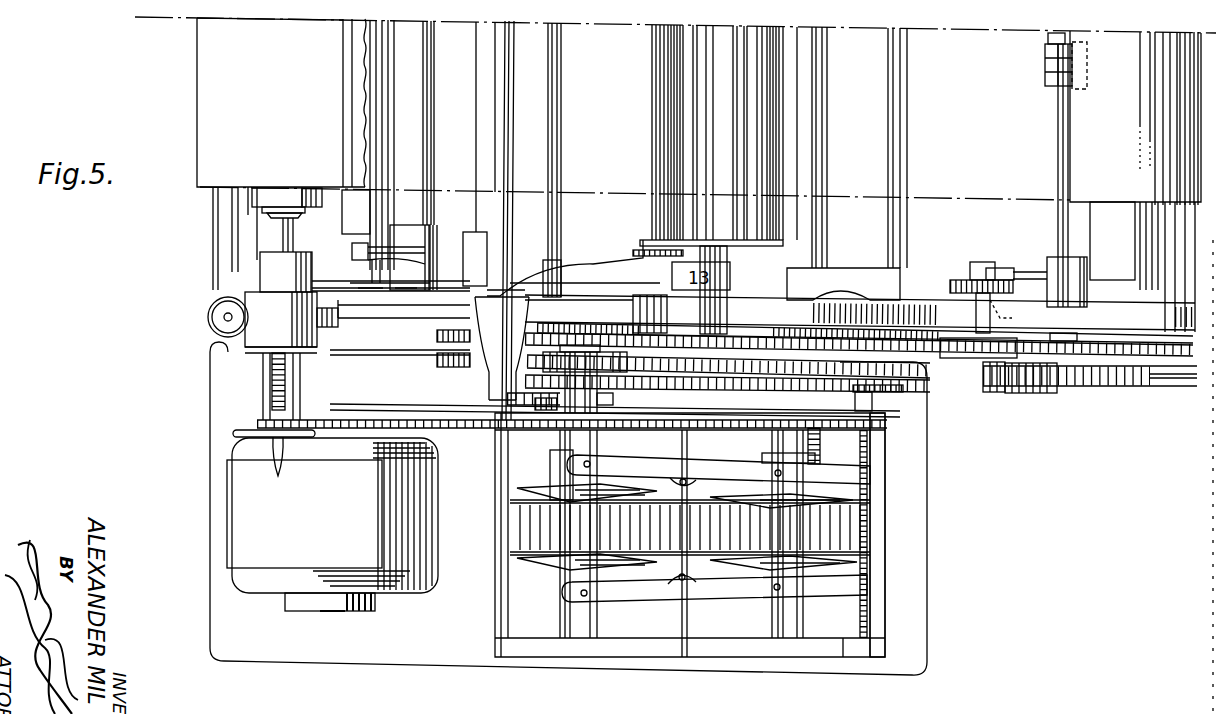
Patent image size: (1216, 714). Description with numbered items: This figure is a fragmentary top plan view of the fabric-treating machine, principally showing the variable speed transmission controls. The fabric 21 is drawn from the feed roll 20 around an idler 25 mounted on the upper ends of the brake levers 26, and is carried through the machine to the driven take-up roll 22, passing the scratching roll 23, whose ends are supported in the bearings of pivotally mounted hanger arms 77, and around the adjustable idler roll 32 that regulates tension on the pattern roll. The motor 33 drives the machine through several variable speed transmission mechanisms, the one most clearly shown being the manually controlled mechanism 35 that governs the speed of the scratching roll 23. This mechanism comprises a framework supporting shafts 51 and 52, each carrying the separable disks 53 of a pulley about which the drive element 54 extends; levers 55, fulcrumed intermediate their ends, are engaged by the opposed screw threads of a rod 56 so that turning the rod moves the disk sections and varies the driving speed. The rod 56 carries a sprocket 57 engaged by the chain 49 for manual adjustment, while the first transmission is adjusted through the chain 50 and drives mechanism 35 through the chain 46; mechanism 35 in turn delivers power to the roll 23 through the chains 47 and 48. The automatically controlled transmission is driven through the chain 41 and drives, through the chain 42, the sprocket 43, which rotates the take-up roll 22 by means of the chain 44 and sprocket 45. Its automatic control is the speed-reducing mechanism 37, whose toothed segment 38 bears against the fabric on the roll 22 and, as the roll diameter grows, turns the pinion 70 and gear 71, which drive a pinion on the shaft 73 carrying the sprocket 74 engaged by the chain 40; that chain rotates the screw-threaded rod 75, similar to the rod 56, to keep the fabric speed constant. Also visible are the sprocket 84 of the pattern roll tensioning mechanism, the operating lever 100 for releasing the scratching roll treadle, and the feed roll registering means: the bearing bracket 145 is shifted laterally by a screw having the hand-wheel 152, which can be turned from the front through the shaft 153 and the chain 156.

The feed roll 20 is at (262, 196).
The fabric 21 is at (362, 127).
The take-up roll 22 is at (1135, 181).
The scratching roll 23 is at (767, 133).
The idler 25 is at (352, 208).
The levers 26 is at (427, 232).
The idler roll 32 is at (824, 176).
The motor 33 is at (242, 514).
The variable speed transmission mechanism 35 is at (748, 650).
The speed-reducing mechanism 37 is at (1050, 62).
The toothed segment 38 is at (1025, 272).
The chain 40 is at (905, 330).
The chain 41 is at (712, 373).
The chain 42 is at (937, 362).
The sprocket 43 is at (1030, 394).
The chain 44 is at (1066, 394).
The sprocket 45 is at (1150, 388).
The chain 46 is at (743, 389).
The chain 47 is at (546, 408).
The chain 48 is at (653, 379).
The chain 49 is at (865, 397).
The chain 50 is at (597, 325).
The shaft 51 is at (601, 443).
The shaft 52 is at (776, 451).
The separable sections or disks 53 is at (612, 556).
The drive element 54 is at (667, 548).
The levers 55 is at (708, 465).
The rod 56 is at (886, 468).
The sprocket 57 is at (917, 388).
The pinion 70 is at (972, 262).
The gear 71 is at (991, 290).
The shaft 73 is at (1001, 312).
The sprocket 74 is at (968, 322).
The screw-threaded rod 75 is at (821, 444).
The hanger arms 77 is at (584, 262).
The sprocket 84 is at (646, 238).
The operating lever 100 is at (379, 293).
The bearing bracket 145 is at (265, 345).
The hand-wheel 152 is at (233, 434).
The shaft 153 is at (507, 157).
The chain 156 is at (457, 430).